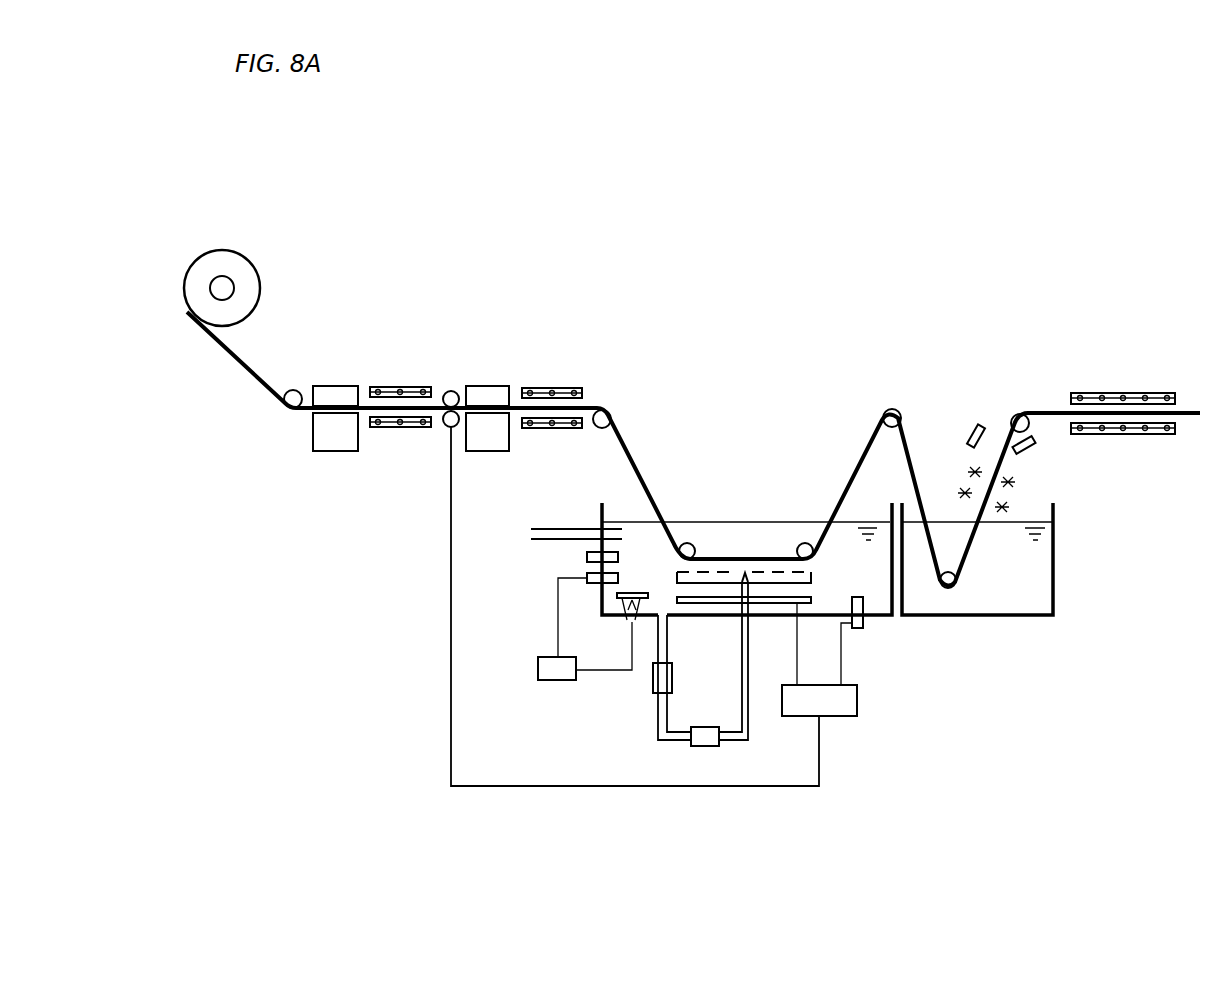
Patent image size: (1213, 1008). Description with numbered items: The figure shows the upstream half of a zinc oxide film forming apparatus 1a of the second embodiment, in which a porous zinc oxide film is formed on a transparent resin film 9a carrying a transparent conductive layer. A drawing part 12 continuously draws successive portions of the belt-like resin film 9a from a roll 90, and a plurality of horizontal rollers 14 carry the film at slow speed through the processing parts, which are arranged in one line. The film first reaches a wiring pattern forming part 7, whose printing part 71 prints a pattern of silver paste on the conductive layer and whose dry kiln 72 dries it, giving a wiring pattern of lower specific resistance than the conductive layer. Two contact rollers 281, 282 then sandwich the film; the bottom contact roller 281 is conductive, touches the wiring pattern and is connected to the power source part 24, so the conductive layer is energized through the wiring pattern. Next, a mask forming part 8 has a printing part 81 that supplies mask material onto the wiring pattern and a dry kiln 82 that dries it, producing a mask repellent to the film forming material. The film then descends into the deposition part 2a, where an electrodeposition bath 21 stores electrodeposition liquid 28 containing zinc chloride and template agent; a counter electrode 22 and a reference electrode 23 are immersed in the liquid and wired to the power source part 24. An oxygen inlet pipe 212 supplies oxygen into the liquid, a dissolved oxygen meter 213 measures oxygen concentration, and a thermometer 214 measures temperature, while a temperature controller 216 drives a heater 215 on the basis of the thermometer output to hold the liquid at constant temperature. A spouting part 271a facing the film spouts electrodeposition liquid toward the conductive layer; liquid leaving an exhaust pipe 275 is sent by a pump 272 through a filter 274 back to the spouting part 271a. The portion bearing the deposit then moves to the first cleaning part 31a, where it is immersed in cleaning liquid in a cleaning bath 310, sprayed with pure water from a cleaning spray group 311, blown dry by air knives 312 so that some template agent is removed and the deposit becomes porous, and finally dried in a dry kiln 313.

The zinc oxide film forming apparatus 1a is at (383, 191).
The roll 90 is at (203, 272).
The drawing part 12 is at (222, 290).
The resin film 9a is at (250, 375).
The rollers 14 is at (290, 395).
The wiring pattern forming part 7 is at (378, 381).
The printing part 71 is at (340, 447).
The dry kiln 72 is at (405, 387).
The mask forming part 8 is at (495, 381).
The printing part 81 is at (490, 447).
The dry kiln 82 is at (552, 388).
The contact roller 281 is at (447, 424).
The contact roller 282 is at (456, 394).
The deposition part 2a is at (808, 810).
The electrodeposition bath 21 is at (600, 505).
The electrodeposition liquid 28 is at (790, 530).
The oxygen inlet pipe 212 is at (540, 529).
The dissolved oxygen meter 213 is at (586, 557).
The thermometer 214 is at (592, 582).
The heater 215 is at (620, 600).
The temperature controller 216 is at (562, 680).
The spouting part 271a is at (745, 572).
The pump 272 is at (653, 678).
The filter 274 is at (707, 746).
The exhaust pipe 275 is at (668, 640).
The counter electrode 22 is at (785, 603).
The reference electrode 23 is at (864, 620).
The power source part 24 is at (857, 700).
The first cleaning part 31a is at (1029, 487).
The cleaning bath 310 is at (978, 617).
The cleaning spray group 311 is at (1032, 490).
The air knives 312 is at (1042, 448).
The dry kiln 313 is at (1123, 375).